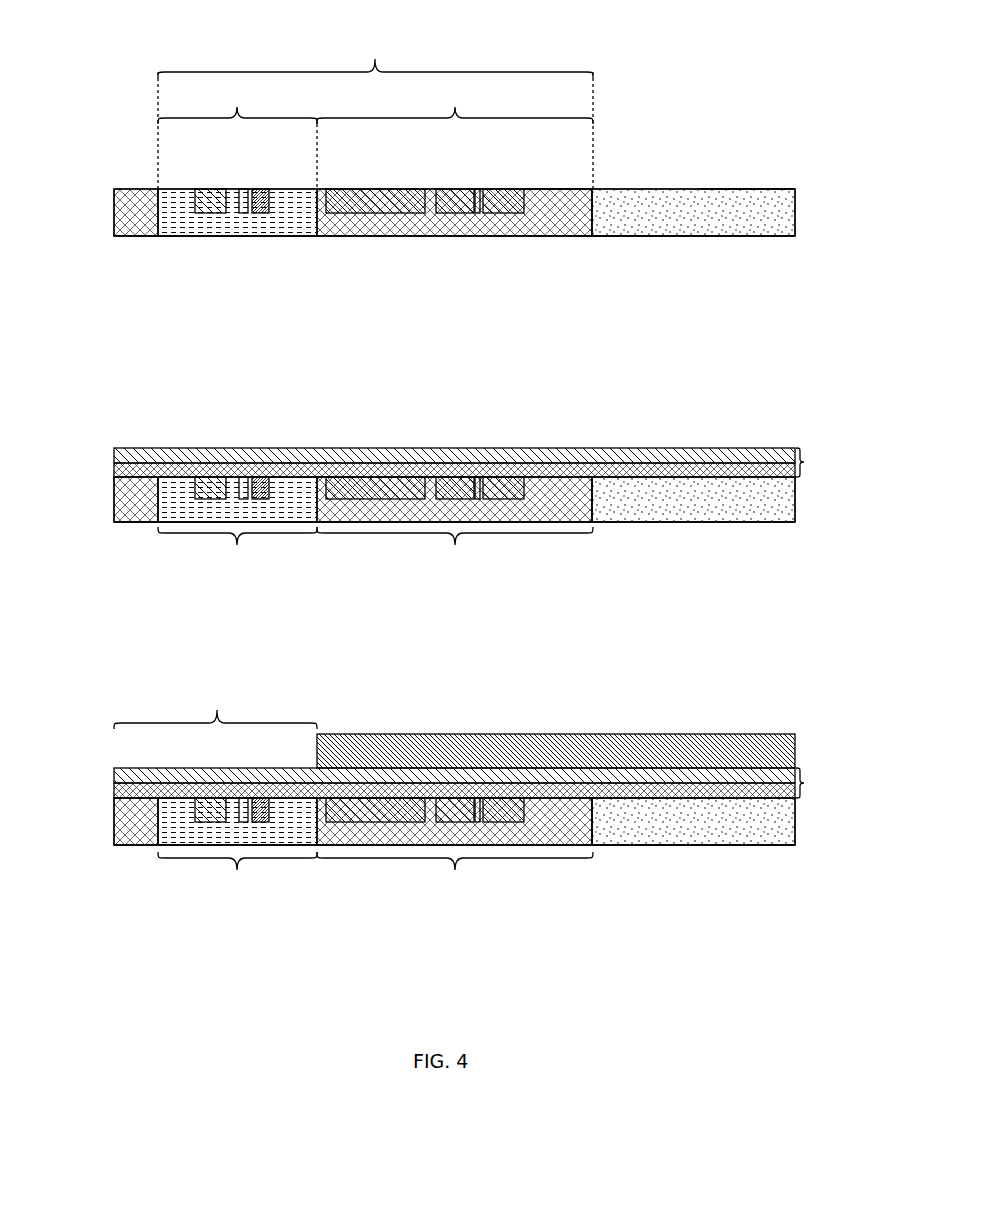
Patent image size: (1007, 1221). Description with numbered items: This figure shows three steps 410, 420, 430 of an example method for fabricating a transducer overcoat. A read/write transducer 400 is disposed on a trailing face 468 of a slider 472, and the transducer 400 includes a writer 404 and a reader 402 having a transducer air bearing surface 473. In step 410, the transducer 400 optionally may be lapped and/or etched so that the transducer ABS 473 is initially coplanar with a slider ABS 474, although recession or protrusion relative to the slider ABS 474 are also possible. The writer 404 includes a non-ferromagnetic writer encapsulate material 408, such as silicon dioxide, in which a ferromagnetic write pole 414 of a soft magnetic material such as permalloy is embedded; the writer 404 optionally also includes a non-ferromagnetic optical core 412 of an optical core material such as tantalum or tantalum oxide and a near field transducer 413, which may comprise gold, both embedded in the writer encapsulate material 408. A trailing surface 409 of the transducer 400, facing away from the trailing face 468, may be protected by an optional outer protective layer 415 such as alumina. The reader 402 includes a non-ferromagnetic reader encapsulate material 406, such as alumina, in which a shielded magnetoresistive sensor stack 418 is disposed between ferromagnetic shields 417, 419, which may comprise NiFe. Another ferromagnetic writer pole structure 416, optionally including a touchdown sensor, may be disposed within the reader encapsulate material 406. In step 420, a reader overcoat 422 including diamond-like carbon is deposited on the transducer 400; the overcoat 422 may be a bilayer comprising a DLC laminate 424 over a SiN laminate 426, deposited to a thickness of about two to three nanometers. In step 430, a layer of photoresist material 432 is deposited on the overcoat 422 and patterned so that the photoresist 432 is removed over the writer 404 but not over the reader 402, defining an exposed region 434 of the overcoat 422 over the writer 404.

The read/write transducer 400 is at (375, 111).
The reader 402 is at (455, 493).
The writer 404 is at (237, 488).
The non-ferromagnetic reader encapsulate material 406 is at (378, 223).
The non-ferromagnetic writer encapsulate material 408 is at (190, 223).
The trailing surface 409 is at (156, 196).
The step 410 is at (647, 143).
The non-ferromagnetic optical core 412 is at (262, 198).
The near field transducer (NFT) 413 is at (241, 198).
The ferromagnetic write pole 414 is at (200, 198).
The outer protective layer 415 is at (133, 223).
The ferromagnetic writer pole structure 416 is at (373, 198).
The ferromagnetic shield 417 is at (451, 198).
The shielded magnetoresistive sensor stack 418 is at (477, 212).
The ferromagnetic shield 419 is at (502, 198).
The step 420 is at (647, 408).
The reader overcoat 422 is at (803, 460).
The DLC laminate 424 is at (452, 456).
The SiN laminate 426 is at (513, 470).
The step 430 is at (647, 697).
The photoresist material 432 is at (513, 750).
The exposed region 434 is at (215, 707).
The trailing face 468 is at (602, 193).
The slider 472 is at (688, 198).
The transducer air bearing surface (ABS) 473 is at (541, 189).
The slider ABS 474 is at (740, 189).